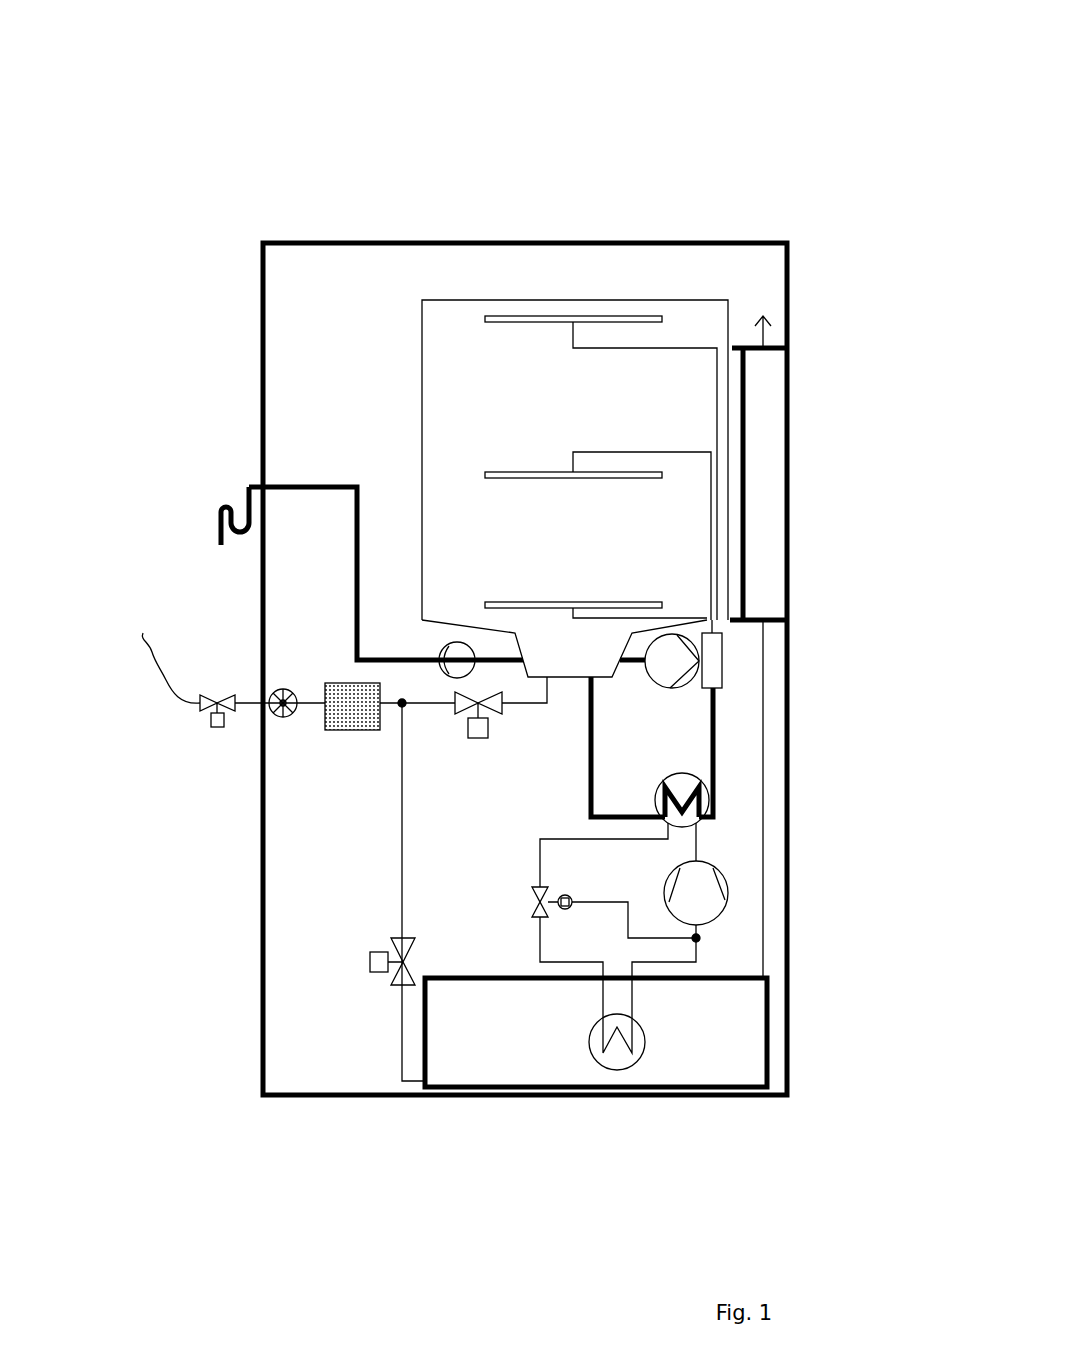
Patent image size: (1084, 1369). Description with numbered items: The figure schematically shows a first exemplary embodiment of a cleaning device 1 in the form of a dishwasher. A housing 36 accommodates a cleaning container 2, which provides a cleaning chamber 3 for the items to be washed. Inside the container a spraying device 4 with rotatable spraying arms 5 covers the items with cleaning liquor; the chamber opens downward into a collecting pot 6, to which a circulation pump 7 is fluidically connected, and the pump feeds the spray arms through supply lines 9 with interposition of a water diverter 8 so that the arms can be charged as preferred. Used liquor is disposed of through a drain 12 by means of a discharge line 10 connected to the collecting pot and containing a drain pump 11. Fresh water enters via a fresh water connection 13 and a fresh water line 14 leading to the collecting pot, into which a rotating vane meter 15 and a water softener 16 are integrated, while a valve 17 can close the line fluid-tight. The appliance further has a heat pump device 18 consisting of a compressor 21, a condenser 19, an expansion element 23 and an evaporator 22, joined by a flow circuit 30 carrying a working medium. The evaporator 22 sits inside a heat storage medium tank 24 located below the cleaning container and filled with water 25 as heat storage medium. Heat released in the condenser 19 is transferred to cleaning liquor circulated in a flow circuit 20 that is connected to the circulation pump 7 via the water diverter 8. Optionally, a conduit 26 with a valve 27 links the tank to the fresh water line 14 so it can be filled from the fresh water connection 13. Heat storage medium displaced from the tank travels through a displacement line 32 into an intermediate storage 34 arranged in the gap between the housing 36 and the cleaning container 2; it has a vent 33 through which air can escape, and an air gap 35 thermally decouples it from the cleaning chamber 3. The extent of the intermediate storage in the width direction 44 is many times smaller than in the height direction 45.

The cleaning device 1 is at (697, 115).
The cleaning container 2 is at (465, 300).
The cleaning chamber 3 is at (450, 365).
The spraying device 4 is at (465, 458).
The spraying arms 5 is at (512, 472).
The collecting pot 6 is at (572, 652).
The circulation pump 7 is at (657, 650).
The water diverter 8 is at (718, 658).
The supply lines 9 is at (673, 615).
The discharge line 10 is at (298, 483).
The drain pump 11 is at (440, 652).
The drain 12 is at (220, 528).
The fresh water connection 13 is at (130, 657).
The fresh water line 14 is at (432, 703).
The rotating vane meter 15 is at (272, 693).
The water softener 16 is at (325, 687).
The valve 17 is at (457, 712).
The heat pump device 18 is at (728, 845).
The condenser 19 is at (710, 788).
The flow circuit 20 is at (717, 737).
The compressor 21 is at (728, 891).
The evaporator 22 is at (625, 1065).
The expansion element 23 is at (527, 892).
The heat storage medium tank 24 is at (455, 1068).
The heat storage medium 25 is at (692, 1032).
The conduit 26 is at (400, 870).
The valve 27 is at (385, 970).
The flow circuit 30 is at (697, 952).
The displacement line 32 is at (760, 673).
The vent 33 is at (763, 308).
The intermediate storage 34 is at (760, 420).
The air gap 35 is at (735, 389).
The housing 36 is at (787, 263).
The width direction 44 is at (850, 464).
The height direction 45 is at (879, 490).